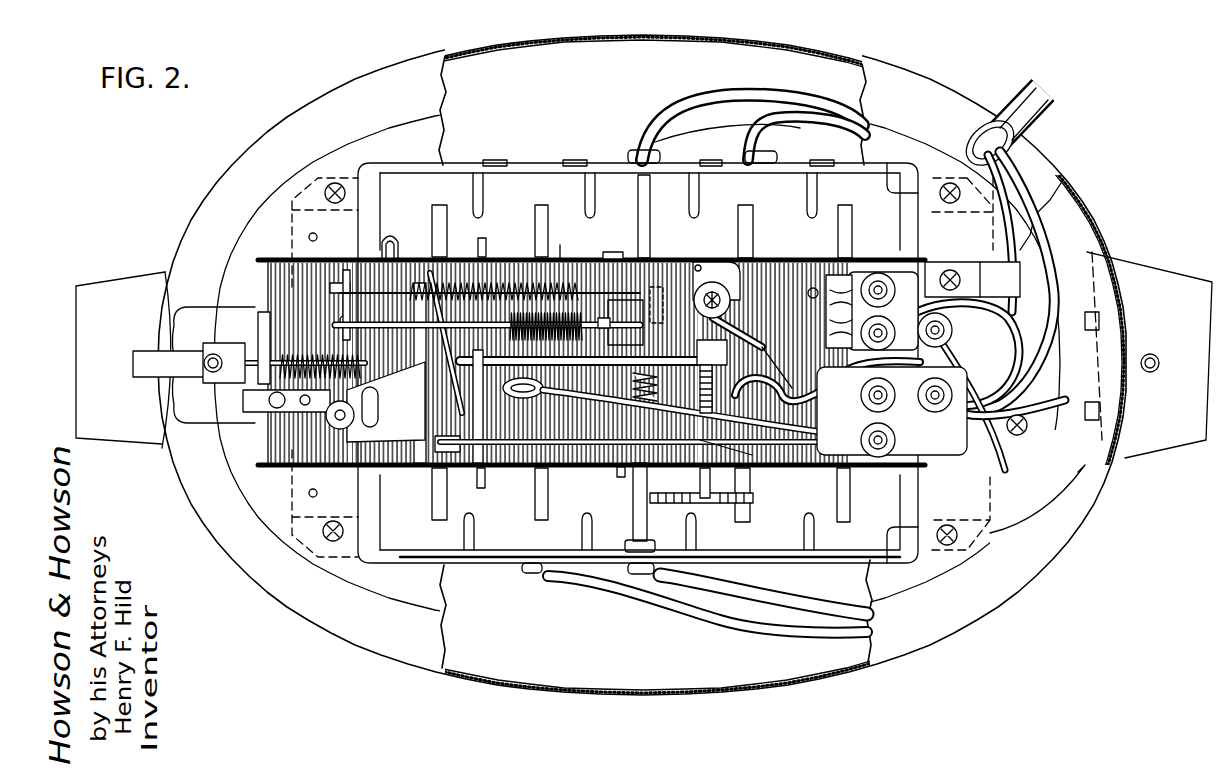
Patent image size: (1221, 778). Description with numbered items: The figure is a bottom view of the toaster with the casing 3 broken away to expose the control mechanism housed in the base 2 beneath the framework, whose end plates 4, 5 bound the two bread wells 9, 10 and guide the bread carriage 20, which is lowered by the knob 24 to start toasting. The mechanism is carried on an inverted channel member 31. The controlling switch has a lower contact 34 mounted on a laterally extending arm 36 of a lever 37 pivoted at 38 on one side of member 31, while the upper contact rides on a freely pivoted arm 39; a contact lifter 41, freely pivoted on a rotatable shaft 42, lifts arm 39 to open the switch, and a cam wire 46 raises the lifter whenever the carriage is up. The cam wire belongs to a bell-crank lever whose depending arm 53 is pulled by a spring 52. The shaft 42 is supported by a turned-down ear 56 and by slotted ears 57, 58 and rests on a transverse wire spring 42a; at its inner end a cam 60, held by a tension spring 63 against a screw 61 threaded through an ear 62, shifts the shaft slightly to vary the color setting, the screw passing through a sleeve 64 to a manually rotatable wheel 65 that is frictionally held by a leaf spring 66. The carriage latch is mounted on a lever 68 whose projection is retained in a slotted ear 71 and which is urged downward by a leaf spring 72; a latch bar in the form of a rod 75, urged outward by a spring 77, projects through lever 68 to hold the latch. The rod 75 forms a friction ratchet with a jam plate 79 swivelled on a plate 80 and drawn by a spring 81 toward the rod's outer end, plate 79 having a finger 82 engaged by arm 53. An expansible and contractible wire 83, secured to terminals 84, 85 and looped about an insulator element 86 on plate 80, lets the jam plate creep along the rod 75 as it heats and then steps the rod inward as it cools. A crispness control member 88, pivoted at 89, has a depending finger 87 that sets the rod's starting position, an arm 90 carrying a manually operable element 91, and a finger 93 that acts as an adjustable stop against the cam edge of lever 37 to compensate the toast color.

The base 2 is at (1022, 455).
The casing 3 is at (786, 52).
The end plate 4 is at (380, 207).
The end plate 5 is at (910, 211).
The bread well 9 is at (780, 528).
The bread well 10 is at (785, 233).
The bread carriage 20 is at (540, 207).
The knob 24 is at (103, 290).
The inverted channel member 31 is at (272, 440).
The lower contact 34 is at (775, 363).
The laterally extending arm 36 is at (712, 262).
The lever 37 is at (561, 245).
The pivot 38 is at (612, 252).
The arm 39 is at (797, 288).
The contact lifter 41 is at (659, 287).
The shaft 42 is at (235, 355).
The wire spring 42a is at (490, 476).
The cam wire 46 is at (594, 268).
The spring 52 is at (510, 268).
The depending arm 53 is at (350, 268).
The ear 56 is at (262, 328).
The ear 57 is at (591, 361).
The ear 58 is at (678, 407).
The cam 60 is at (721, 362).
The screw 61 is at (714, 394).
The ear 62 is at (640, 432).
The tension spring 63 is at (632, 385).
The sleeve 64 is at (752, 455).
The wheel 65 is at (722, 505).
The leaf spring 66 is at (623, 472).
The lever 68 is at (375, 398).
The slotted ear 71 is at (343, 290).
The leaf spring 72 is at (362, 430).
The rod 75 is at (621, 308).
The spring 77 is at (545, 388).
The jam plate 79 is at (465, 412).
The plate 80 is at (446, 412).
The spring 81 is at (288, 348).
The finger 82 is at (445, 268).
The wire 83 is at (545, 444).
The terminal 84 is at (879, 452).
The terminal 85 is at (888, 399).
The insulator element 86 is at (442, 455).
The depending finger 87 is at (340, 318).
The crispness control member 88 is at (240, 420).
The pivot 89 is at (330, 428).
The arm 90 is at (244, 398).
The manually-operable element 91 is at (140, 366).
The finger 93 is at (392, 247).